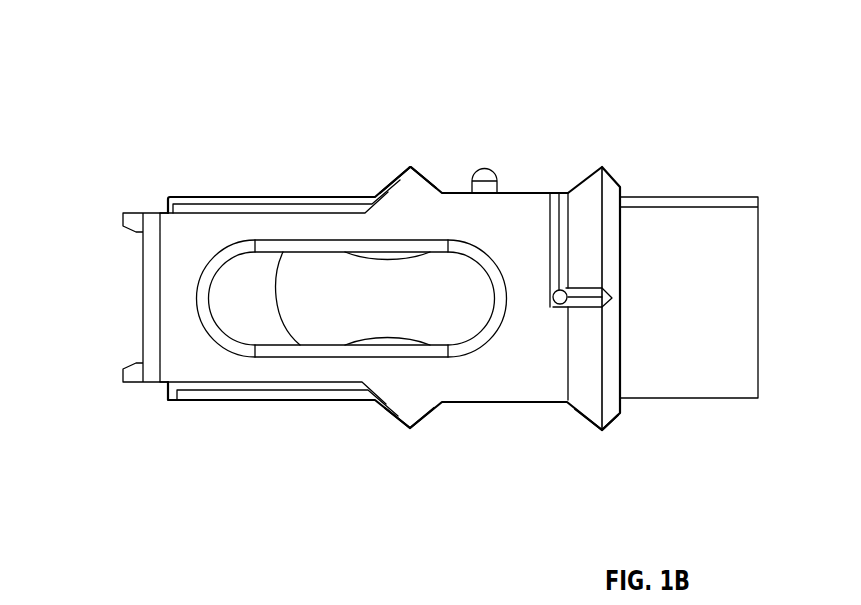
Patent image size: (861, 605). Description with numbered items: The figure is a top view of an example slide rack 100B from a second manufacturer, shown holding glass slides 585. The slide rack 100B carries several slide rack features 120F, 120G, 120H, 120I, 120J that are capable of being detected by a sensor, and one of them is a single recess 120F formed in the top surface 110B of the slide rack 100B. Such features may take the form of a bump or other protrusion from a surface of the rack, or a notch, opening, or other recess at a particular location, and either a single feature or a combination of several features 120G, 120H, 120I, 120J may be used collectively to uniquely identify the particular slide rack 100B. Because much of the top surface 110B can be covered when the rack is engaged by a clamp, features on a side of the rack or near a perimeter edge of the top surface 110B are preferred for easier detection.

The slide rack 100B is at (120, 398).
The top surface 110B is at (188, 242).
The recess 120F is at (328, 265).
The slide rack feature 120G is at (408, 168).
The slide rack feature 120H is at (491, 168).
The slide rack feature 120I is at (410, 428).
The slide rack feature 120J is at (597, 430).
The glass slides 585 is at (685, 363).